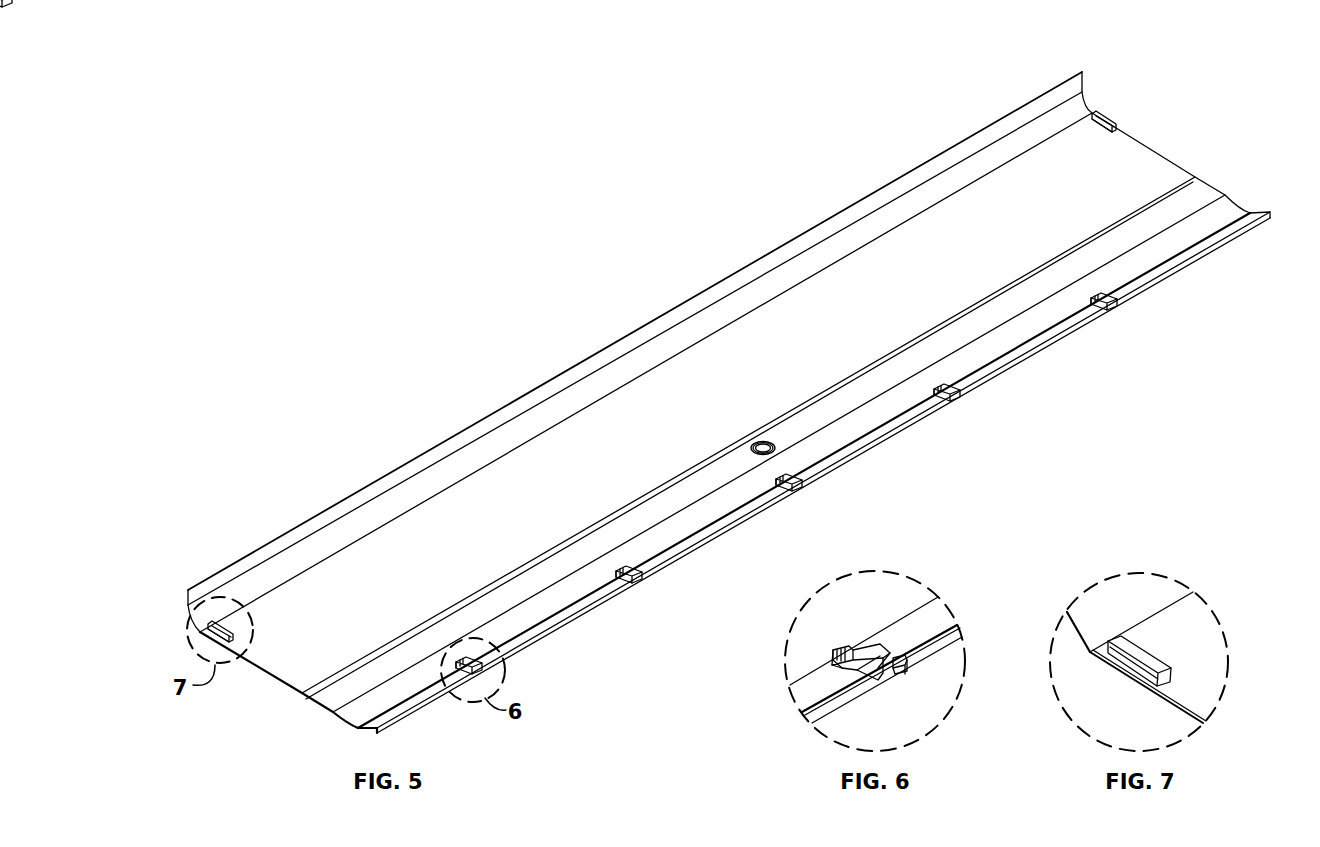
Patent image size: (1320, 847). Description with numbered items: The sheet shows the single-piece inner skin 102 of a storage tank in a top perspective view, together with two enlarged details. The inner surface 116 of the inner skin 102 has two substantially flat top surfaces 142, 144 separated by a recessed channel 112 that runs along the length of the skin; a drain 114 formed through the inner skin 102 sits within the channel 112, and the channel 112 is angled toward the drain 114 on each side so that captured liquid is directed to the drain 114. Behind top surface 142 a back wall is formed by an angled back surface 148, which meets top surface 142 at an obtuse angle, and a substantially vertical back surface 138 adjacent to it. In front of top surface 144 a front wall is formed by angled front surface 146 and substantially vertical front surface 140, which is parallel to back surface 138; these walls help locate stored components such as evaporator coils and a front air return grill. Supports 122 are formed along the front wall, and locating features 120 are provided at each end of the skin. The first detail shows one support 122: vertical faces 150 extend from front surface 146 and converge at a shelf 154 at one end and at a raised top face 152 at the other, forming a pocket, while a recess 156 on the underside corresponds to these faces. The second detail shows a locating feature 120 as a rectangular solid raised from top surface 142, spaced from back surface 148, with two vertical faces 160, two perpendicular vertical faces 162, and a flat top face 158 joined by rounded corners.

In FIG. 5, the inner skin 102 is at (775, 175).
In FIG. 5, the channel 112 is at (880, 380).
In FIG. 5, the drain 114 is at (765, 440).
In FIG. 5, the inner surface 116 is at (641, 402).
In FIG. 5, the locating feature 120 is at (222, 628).
In FIG. 7, the locating feature 120 is at (1140, 611).
In FIG. 5, the support 122 is at (473, 650).
In FIG. 6, the support 122 is at (867, 628).
In FIG. 5, the back surface 138 is at (393, 482).
In FIG. 5, the front surface 140 is at (400, 718).
In FIG. 6, the front surface 140 is at (842, 697).
In FIG. 5, the top surface 142 is at (535, 477).
In FIG. 7, the top surface 142 is at (1210, 673).
In FIG. 5, the top surface 144 is at (363, 707).
In FIG. 5, the front surface 146 is at (663, 551).
In FIG. 6, the front surface 146 is at (805, 693).
In FIG. 5, the back surface 148 is at (295, 557).
In FIG. 7, the back surface 148 is at (1105, 607).
In FIG. 6, the vertical faces 150 is at (838, 658).
In FIG. 6, the top face 152 is at (877, 653).
In FIG. 6, the shelf 154 is at (848, 642).
In FIG. 6, the recess 156 is at (896, 672).
In FIG. 7, the top face 158 is at (1120, 640).
In FIG. 7, the vertical faces 160 is at (1132, 663).
In FIG. 7, the vertical faces 162 is at (1168, 678).